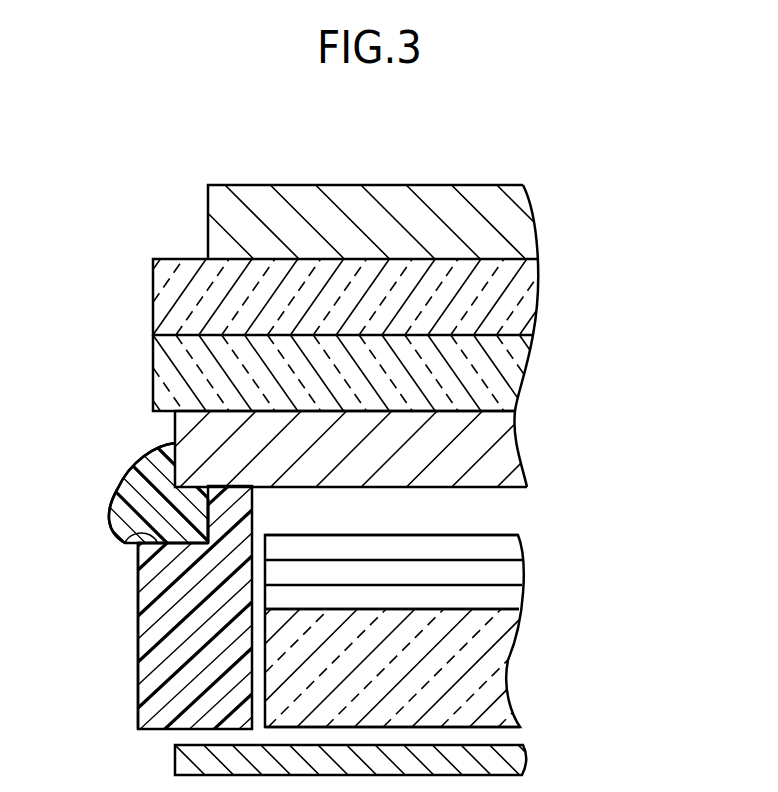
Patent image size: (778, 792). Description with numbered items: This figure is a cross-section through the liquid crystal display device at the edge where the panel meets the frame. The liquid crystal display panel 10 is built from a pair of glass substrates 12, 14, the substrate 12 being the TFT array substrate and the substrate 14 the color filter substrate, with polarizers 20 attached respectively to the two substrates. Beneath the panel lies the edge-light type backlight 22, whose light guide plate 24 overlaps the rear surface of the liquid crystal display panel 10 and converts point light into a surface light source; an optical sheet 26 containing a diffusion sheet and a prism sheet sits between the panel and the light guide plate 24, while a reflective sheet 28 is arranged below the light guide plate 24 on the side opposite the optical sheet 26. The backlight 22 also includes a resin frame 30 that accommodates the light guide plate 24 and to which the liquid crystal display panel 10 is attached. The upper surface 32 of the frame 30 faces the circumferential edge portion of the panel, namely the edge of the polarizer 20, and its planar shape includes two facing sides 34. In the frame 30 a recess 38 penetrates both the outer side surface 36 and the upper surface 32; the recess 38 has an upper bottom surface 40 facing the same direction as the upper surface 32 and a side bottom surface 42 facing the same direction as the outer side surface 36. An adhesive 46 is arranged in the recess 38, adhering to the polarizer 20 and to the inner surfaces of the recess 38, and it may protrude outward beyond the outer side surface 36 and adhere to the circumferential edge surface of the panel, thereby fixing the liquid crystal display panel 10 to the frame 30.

The liquid crystal display panel 10 is at (660, 407).
The substrate 12 is at (500, 380).
The substrate 14 is at (520, 311).
The polarizer 20 is at (520, 217).
The backlight 22 is at (666, 635).
The light guide plate 24 is at (502, 665).
The optical sheet 26 is at (560, 570).
The reflective sheet 28 is at (515, 767).
The frame 30 is at (158, 675).
The upper surface 32 is at (236, 500).
The side 34 is at (137, 546).
The outer side surface 36 is at (138, 592).
The recess 38 is at (178, 530).
The upper bottom surface 40 is at (140, 532).
The side bottom surface 42 is at (205, 515).
The adhesive 46 is at (117, 522).